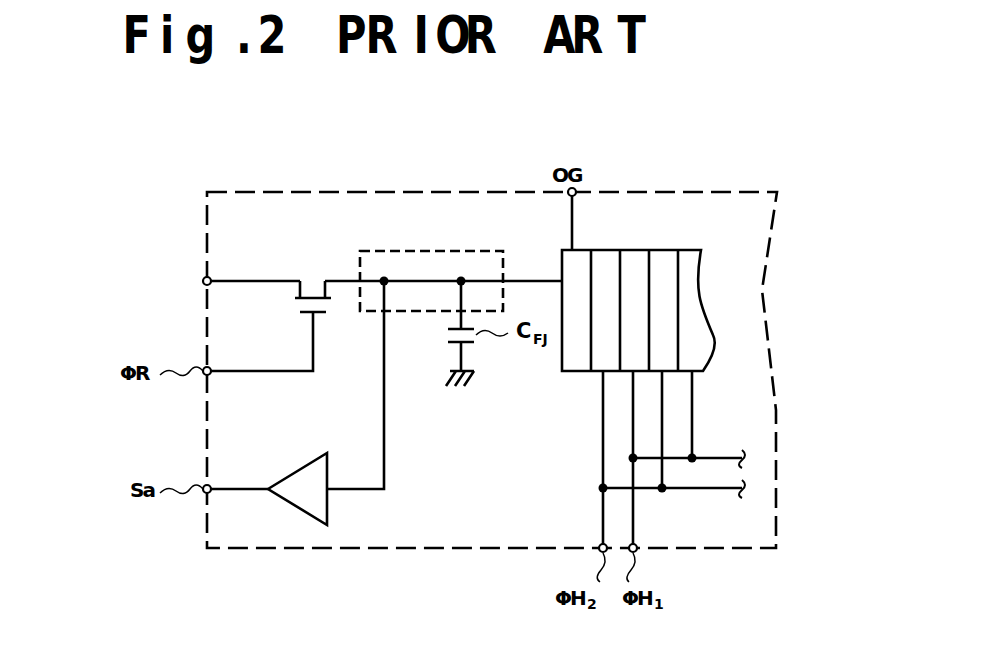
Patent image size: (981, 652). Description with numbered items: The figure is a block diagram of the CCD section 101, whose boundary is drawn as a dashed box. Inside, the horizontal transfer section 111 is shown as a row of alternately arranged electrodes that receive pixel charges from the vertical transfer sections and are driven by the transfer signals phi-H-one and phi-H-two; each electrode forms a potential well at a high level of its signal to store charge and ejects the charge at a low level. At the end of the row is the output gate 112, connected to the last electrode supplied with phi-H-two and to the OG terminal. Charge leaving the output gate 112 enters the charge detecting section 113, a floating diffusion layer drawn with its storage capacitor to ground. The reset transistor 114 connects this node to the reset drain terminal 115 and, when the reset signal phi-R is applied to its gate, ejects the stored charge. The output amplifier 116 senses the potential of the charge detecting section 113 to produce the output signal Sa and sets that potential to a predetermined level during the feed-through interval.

The CCD section 101 is at (686, 190).
The horizontal transfer section 111 is at (713, 323).
The output gate 112 is at (578, 257).
The charge detecting section 113 is at (392, 250).
The reset transistor 114 is at (311, 278).
The reset drain terminal 115 is at (203, 281).
The output amplifier 116 is at (300, 466).